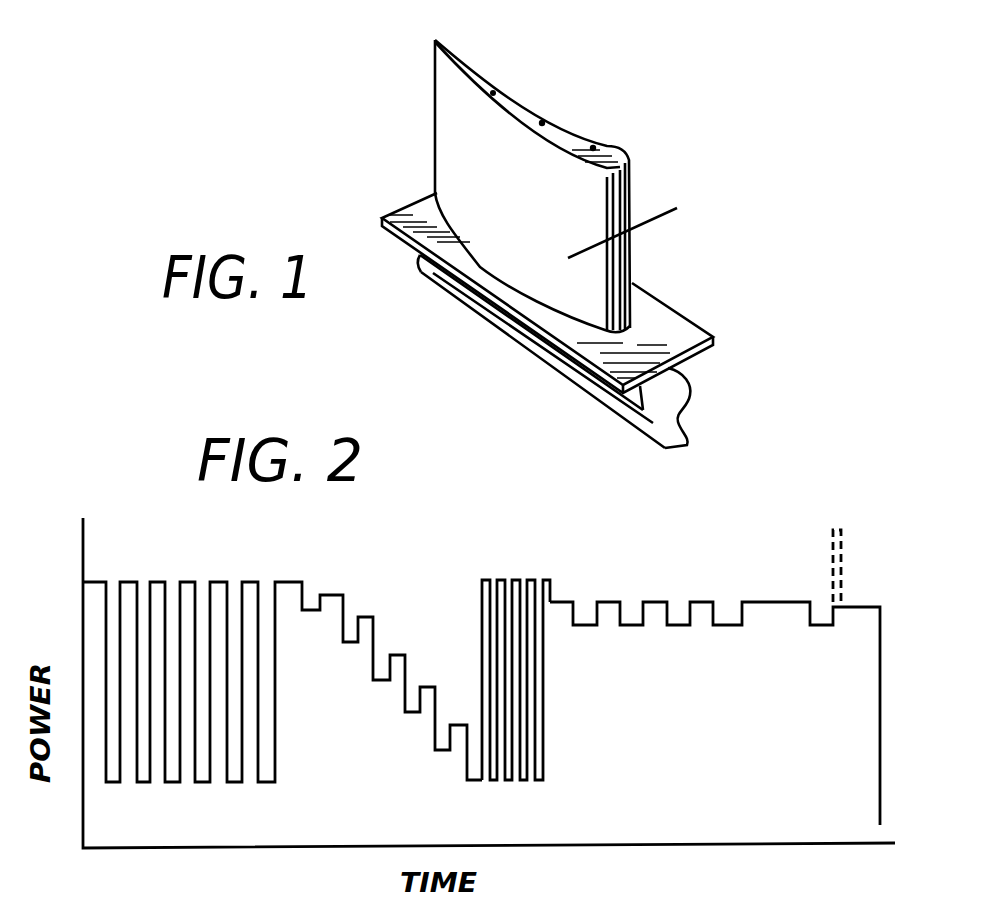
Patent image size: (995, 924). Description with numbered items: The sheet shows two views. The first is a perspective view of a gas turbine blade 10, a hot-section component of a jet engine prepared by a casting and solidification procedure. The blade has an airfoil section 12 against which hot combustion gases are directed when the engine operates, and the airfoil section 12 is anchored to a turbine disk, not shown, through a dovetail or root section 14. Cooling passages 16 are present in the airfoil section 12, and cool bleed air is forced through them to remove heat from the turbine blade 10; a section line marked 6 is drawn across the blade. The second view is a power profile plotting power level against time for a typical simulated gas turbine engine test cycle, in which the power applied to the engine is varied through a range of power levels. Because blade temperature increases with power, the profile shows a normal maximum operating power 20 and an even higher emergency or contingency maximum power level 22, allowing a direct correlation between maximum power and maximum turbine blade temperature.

In FIG. 1, the gas turbine blade 10 is at (530, 253).
In FIG. 1, the airfoil section 12 is at (436, 174).
In FIG. 1, the root section 14 is at (614, 413).
In FIG. 1, the cooling passages 16 is at (593, 148).
In FIG. 1, the section line 6- 6 is at (577, 242).
In FIG. 2, the normal maximum operating power 20 is at (558, 570).
In FIG. 2, the emergency or contingency maximum power level 22 is at (820, 531).